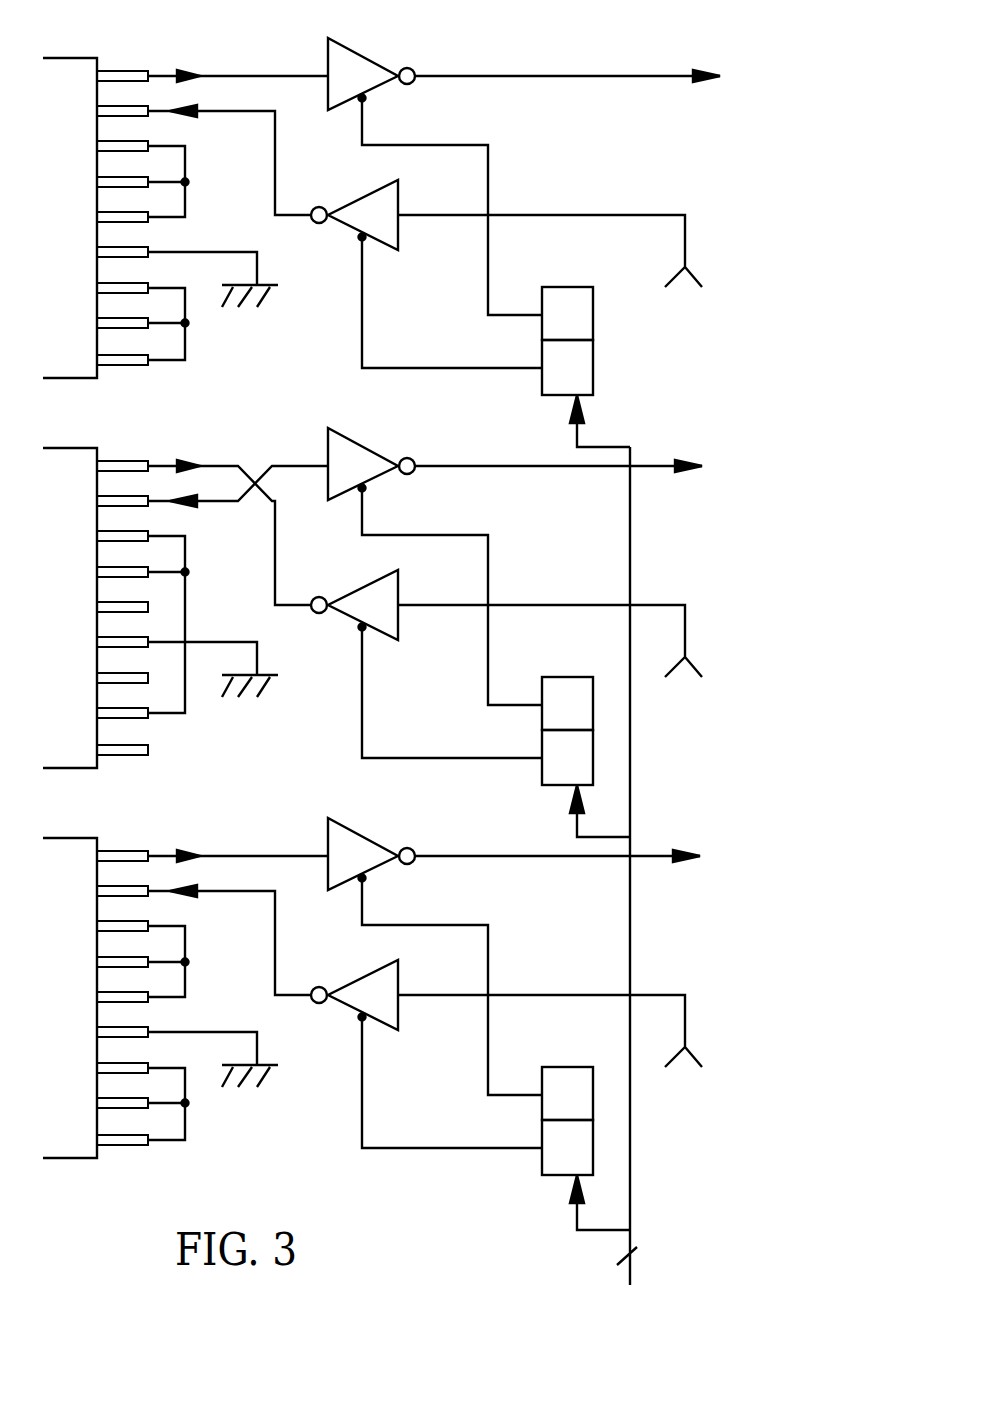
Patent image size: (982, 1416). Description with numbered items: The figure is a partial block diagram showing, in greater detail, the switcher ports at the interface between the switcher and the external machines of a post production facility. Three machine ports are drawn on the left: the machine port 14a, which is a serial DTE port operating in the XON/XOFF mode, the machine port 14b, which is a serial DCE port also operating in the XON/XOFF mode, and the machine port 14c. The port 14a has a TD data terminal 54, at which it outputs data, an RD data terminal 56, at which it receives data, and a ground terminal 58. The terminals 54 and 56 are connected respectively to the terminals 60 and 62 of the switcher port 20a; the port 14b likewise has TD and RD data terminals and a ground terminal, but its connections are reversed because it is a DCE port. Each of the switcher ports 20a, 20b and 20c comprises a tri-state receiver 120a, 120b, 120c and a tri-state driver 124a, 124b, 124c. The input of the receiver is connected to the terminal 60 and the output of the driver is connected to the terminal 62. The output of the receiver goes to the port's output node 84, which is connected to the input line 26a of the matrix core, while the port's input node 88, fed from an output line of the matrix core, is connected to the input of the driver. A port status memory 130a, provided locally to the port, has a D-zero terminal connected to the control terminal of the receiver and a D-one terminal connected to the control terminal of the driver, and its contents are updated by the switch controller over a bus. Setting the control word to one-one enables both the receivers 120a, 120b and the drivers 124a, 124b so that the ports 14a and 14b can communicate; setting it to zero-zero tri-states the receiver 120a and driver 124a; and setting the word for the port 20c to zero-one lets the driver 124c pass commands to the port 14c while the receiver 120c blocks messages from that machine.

The machine port 14a is at (78, 58).
The machine port 14b is at (144, 589).
The machine port 14c is at (169, 979).
The switcher port 20a is at (305, 34).
The switcher port 20b is at (462, 617).
The switcher port 20c is at (462, 1008).
The TD data terminal 54 is at (130, 70).
The RD data terminal 56 is at (150, 113).
The ground terminal 58 is at (205, 252).
The terminal 60 is at (308, 74).
The terminal 62 is at (300, 208).
The output node 84 is at (478, 76).
The input node 88 is at (522, 215).
The tri-state receiver 120a is at (365, 55).
The tri-state receiver 120b is at (435, 560).
The tri-state receiver 120c is at (435, 950).
The tri-state driver 124a is at (358, 239).
The tri-state driver 124b is at (408, 664).
The tri-state driver 124c is at (408, 1054).
The input line 26a is at (650, 76).
The port status memory 130a is at (600, 368).